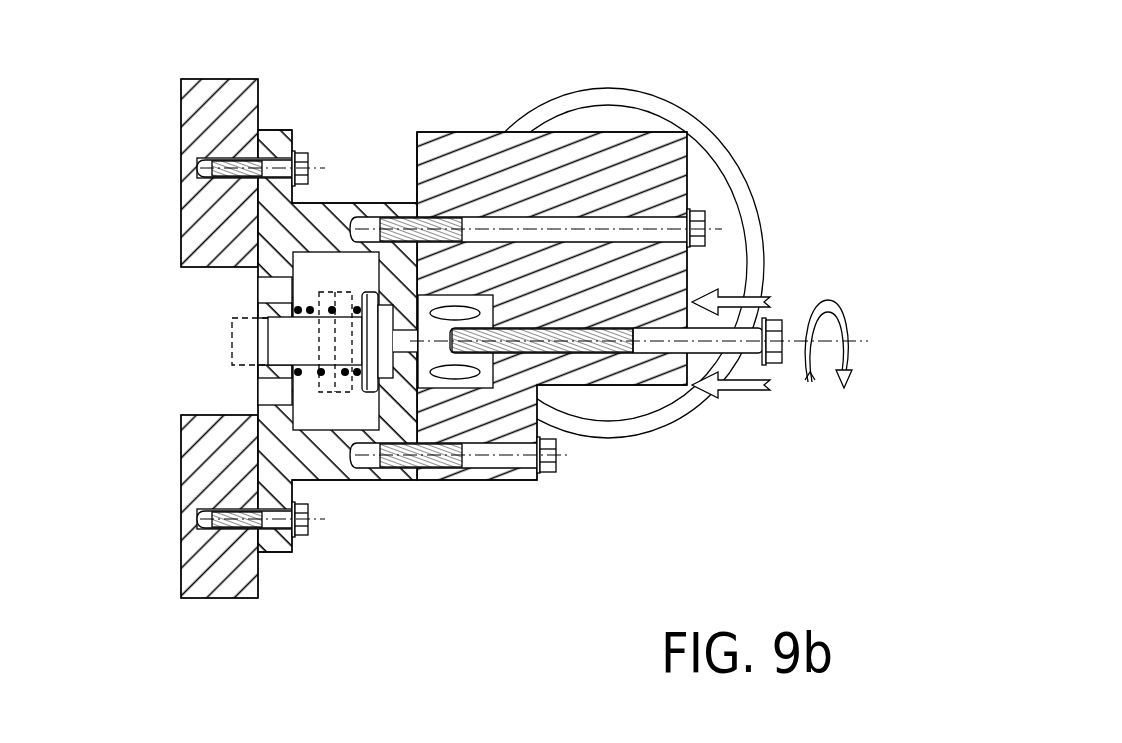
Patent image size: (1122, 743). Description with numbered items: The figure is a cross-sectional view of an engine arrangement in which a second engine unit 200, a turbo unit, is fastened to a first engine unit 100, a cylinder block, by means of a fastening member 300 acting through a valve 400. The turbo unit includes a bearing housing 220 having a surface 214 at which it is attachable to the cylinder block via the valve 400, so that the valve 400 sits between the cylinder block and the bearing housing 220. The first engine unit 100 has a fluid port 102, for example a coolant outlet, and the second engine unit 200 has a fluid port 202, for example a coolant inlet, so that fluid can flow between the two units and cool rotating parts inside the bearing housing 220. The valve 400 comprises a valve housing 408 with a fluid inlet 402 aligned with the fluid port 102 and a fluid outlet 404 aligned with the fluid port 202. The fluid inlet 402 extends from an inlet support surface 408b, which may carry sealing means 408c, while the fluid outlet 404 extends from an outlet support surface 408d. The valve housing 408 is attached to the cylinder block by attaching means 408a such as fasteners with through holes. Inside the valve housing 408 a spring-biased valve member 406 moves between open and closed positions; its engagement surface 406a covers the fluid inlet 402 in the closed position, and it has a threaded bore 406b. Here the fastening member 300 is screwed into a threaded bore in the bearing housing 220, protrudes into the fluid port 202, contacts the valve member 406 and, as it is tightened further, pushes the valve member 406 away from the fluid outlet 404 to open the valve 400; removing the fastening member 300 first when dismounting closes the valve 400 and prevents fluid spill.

The first engine unit 100 is at (181, 132).
The fluid port 102 is at (203, 338).
The second engine unit 200 is at (728, 70).
The fluid port 202 is at (537, 395).
The surface 214 is at (383, 162).
The bearing housing 220 is at (612, 163).
The fastening member 300 is at (642, 355).
The valve 400 is at (373, 481).
The fluid inlet 402 is at (238, 285).
The fluid outlet 404 is at (418, 333).
The valve member 406 is at (307, 341).
The engagement surface 406a is at (478, 362).
The threaded bore 406b is at (268, 333).
The valve housing 408 is at (411, 481).
The means for attaching 408a is at (312, 163).
The inlet support surface 408b is at (258, 458).
The sealing means 408c is at (258, 482).
The outlet support surface 408d is at (462, 400).